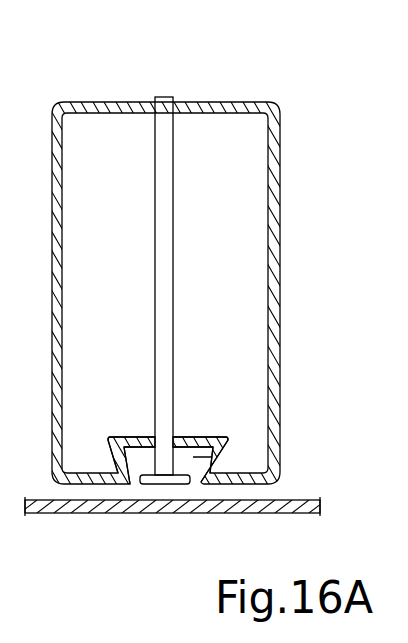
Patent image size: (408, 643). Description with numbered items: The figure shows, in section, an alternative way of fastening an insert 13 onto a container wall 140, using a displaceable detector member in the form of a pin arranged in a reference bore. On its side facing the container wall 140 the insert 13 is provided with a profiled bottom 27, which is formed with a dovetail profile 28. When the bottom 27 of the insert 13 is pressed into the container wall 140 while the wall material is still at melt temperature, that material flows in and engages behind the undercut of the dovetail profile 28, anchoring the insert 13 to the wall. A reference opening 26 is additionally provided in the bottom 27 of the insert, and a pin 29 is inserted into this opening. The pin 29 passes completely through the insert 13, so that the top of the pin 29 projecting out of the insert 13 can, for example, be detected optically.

The insert 13 is at (290, 95).
The pin 29 is at (163, 280).
The reference opening 26 is at (181, 427).
The profiled bottom 27 is at (123, 484).
The dovetail profile 28 is at (222, 453).
The container wall 140 is at (226, 505).